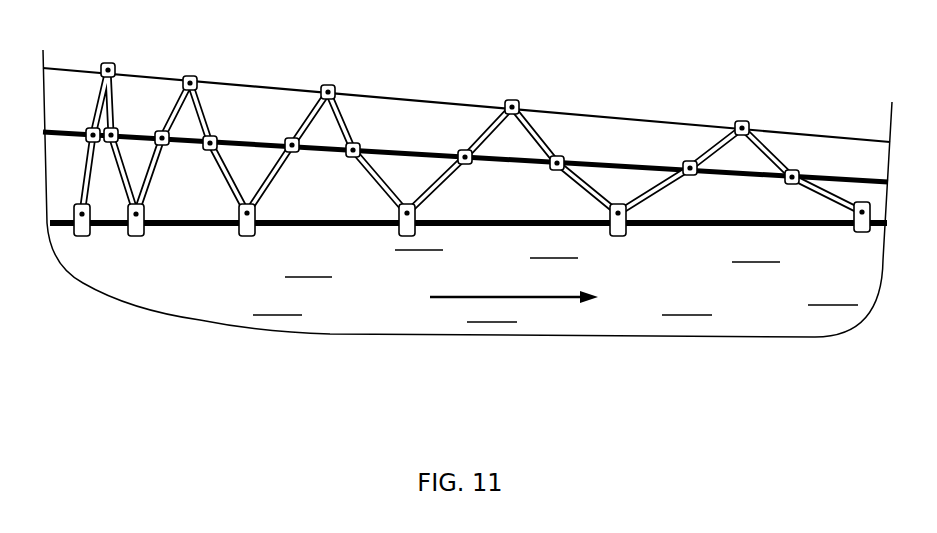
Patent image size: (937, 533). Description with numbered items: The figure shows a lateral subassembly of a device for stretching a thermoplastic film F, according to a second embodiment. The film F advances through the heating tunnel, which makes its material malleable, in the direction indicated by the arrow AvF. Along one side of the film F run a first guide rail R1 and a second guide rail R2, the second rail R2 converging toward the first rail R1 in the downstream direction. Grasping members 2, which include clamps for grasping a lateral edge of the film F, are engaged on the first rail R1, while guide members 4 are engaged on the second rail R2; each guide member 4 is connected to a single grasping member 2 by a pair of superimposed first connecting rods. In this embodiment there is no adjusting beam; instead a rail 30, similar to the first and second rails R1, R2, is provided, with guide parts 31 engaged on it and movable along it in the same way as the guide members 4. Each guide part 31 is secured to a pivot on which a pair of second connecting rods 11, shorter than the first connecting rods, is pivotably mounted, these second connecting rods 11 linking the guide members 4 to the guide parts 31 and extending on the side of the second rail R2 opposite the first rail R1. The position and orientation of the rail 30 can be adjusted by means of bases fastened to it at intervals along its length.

The rail 30 is at (218, 85).
The guide parts 31 is at (327, 85).
The guide members 4 is at (285, 133).
The second connecting rods 11 is at (310, 105).
The second guide rail R2 is at (590, 158).
The first guide rail R1 is at (670, 217).
The grasping members 2 is at (397, 232).
The direction of advance of the film AvF is at (443, 297).
The thermoplastic film F is at (775, 308).